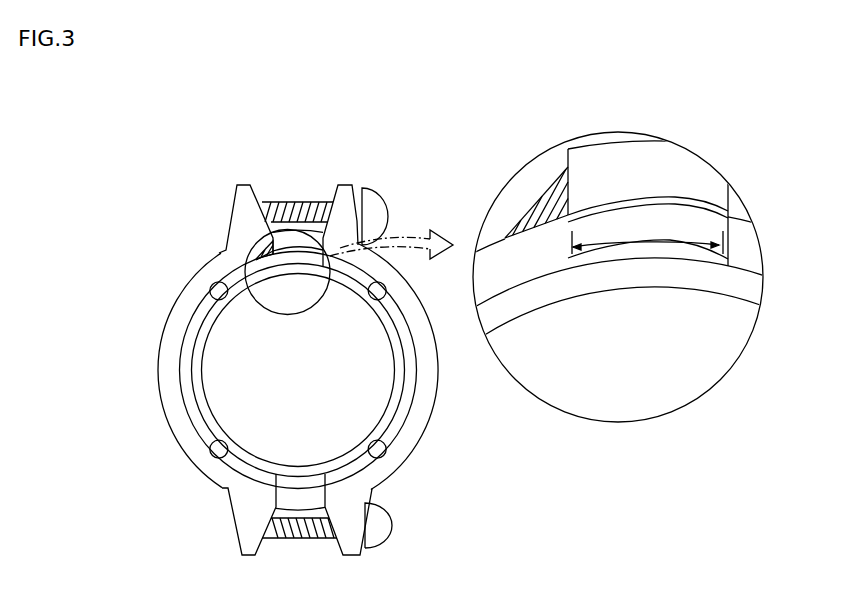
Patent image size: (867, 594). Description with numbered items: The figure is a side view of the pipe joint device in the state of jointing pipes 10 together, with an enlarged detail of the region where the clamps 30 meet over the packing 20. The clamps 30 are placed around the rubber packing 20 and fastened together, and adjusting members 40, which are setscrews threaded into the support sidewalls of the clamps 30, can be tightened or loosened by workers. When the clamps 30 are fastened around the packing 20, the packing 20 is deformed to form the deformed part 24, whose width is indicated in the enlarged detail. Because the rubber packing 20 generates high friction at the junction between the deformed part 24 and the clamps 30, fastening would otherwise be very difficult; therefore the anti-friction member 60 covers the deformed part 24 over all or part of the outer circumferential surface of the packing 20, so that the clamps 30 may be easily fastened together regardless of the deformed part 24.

The pipe 10 is at (200, 347).
The packing 20 is at (553, 248).
The deformed part 24 is at (647, 234).
The clamp 30 is at (167, 417).
The adjusting member 40 is at (208, 292).
The anti-friction member 60 is at (702, 210).